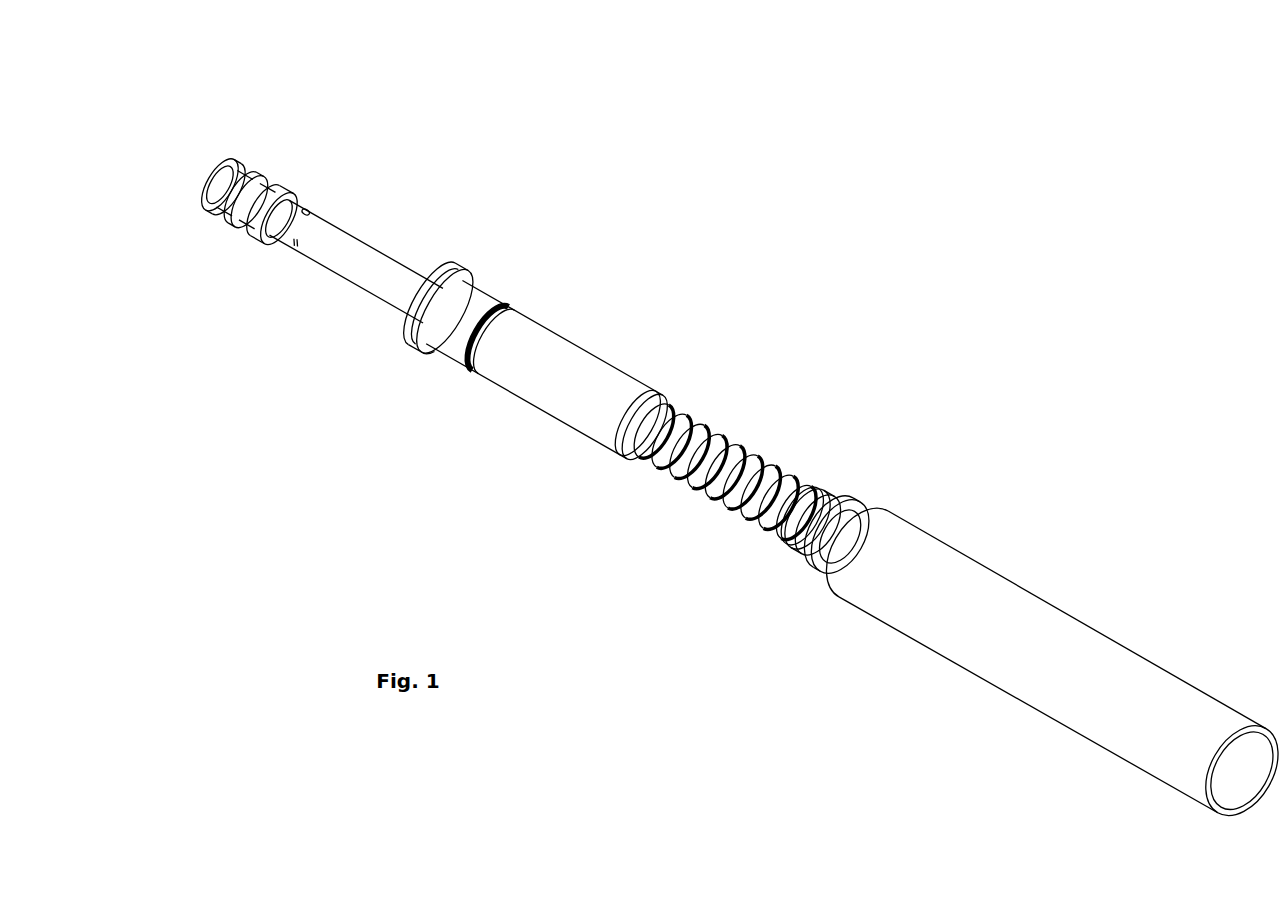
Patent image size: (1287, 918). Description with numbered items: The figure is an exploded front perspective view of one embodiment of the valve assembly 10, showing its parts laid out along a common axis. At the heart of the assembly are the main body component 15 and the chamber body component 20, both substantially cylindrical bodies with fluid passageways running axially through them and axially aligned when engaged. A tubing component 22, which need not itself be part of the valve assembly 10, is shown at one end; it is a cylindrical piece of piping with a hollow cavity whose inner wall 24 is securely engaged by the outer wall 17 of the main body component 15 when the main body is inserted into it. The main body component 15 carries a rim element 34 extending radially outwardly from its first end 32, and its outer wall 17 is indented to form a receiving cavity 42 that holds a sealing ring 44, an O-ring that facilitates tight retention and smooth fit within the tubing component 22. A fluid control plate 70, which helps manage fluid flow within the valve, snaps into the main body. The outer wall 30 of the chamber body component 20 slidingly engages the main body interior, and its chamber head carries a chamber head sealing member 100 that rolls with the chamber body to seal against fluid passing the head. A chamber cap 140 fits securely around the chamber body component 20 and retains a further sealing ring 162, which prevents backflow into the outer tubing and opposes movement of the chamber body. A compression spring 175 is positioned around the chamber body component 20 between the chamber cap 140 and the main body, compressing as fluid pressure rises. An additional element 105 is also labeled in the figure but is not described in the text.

The valve assembly 10 is at (296, 456).
The main body component 15 is at (540, 384).
The outer wall of main body component 17 is at (599, 346).
The chamber body component 20 is at (359, 274).
The tubing component 22 is at (1053, 589).
The inner wall of tubing component 24 is at (1254, 788).
The outer wall of chamber body component 30 is at (361, 226).
The first end of main body component 32 is at (435, 386).
The rim element 34 is at (466, 262).
The receiving cavity 42 is at (508, 309).
The sealing ring 44 is at (808, 555).
The fluid control plate 70 is at (234, 149).
The chamber head sealing member 100 is at (266, 161).
The aperture 105 is at (314, 207).
The chamber cap 140 is at (778, 545).
The sealing ring 162 is at (811, 471).
The compression spring 175 is at (753, 435).